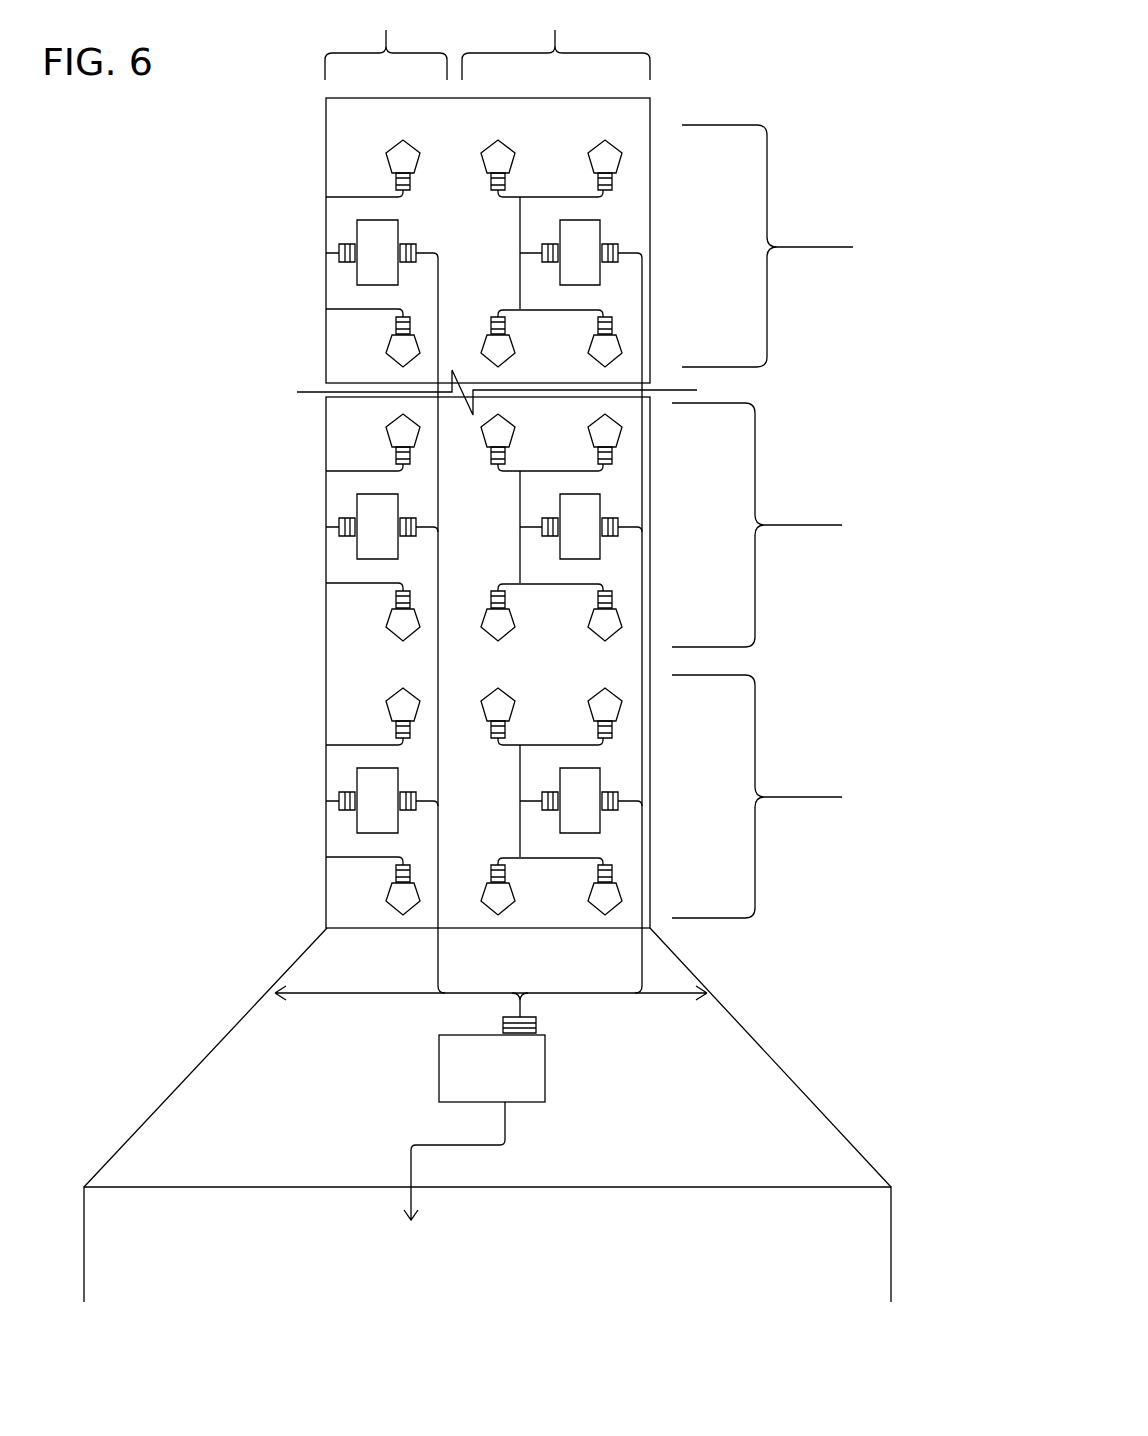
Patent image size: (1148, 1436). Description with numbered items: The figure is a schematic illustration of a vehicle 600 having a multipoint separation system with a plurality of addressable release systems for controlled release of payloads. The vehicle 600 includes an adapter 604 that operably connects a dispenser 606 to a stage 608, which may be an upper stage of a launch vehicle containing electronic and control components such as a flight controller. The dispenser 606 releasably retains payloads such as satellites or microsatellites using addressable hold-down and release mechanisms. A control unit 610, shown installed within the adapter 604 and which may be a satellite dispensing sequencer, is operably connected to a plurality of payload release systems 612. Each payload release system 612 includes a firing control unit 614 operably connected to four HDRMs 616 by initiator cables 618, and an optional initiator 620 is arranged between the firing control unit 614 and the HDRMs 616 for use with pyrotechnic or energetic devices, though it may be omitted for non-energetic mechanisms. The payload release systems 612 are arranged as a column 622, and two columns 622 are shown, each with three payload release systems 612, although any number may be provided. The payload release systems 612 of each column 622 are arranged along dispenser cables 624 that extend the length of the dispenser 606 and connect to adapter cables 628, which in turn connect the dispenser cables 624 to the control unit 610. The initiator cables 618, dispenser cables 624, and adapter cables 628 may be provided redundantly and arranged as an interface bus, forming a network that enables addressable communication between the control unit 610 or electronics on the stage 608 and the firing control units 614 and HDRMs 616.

The vehicle 600 is at (164, 254).
The adapter 604 is at (769, 1077).
The dispenser 606 is at (335, 134).
The stage 608 is at (865, 1257).
The control unit 610 is at (447, 1082).
The payload release system 612 is at (790, 521).
The firing control unit 614 is at (597, 227).
The HDRM 616 is at (493, 147).
The initiator cable 618 is at (553, 197).
The initiator 620 is at (493, 180).
The column 622 is at (487, 40).
The dispenser cable 624 is at (643, 312).
The adapter cable 628 is at (577, 994).